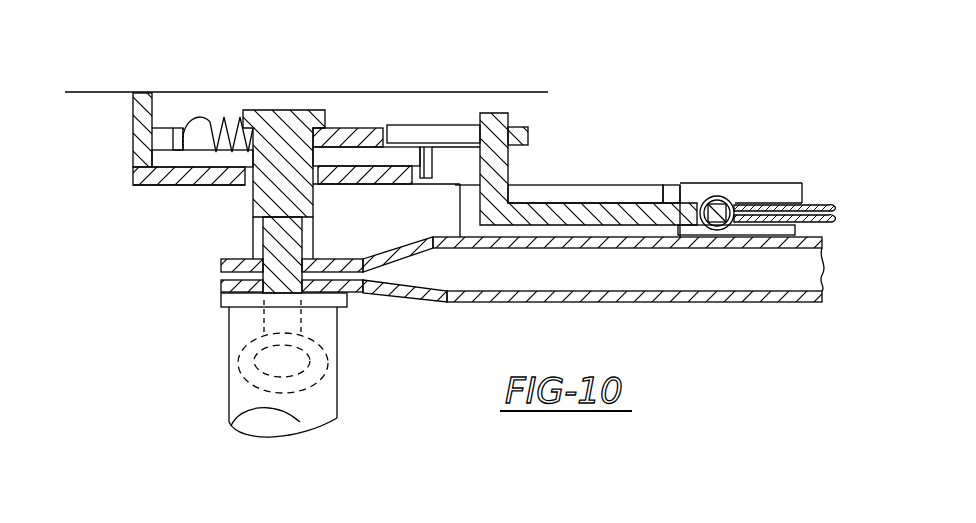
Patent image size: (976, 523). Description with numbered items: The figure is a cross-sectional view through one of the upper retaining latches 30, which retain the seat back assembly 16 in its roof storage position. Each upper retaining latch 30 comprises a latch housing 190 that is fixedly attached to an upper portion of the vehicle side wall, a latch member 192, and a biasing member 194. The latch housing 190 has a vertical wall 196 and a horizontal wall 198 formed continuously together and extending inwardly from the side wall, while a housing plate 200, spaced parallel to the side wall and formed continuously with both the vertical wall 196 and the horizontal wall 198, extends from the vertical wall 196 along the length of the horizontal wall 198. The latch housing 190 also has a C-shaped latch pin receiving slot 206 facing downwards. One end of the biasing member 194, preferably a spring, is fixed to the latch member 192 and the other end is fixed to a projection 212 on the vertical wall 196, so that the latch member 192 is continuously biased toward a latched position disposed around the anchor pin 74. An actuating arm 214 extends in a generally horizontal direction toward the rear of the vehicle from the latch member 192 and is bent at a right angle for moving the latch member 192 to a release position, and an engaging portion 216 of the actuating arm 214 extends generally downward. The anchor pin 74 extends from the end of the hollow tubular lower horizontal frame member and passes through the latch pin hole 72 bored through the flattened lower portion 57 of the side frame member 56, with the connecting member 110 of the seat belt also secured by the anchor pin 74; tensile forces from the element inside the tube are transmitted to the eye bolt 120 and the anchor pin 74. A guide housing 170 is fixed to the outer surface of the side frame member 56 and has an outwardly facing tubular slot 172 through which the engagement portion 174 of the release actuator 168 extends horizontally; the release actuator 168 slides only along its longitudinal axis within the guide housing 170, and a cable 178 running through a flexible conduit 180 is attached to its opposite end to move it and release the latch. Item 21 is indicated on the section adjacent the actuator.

The seat back assembly 16 is at (745, 181).
The pin end 21 is at (435, 174).
The upper retaining latch 30 is at (125, 171).
The side frame member 56 is at (732, 303).
The lower portion 57 is at (366, 283).
The latch pin hole 72 is at (305, 227).
The anchor pin 74 is at (315, 92).
The connecting member 110 is at (350, 294).
The eye bolt 120 is at (320, 384).
The release actuator 168 is at (640, 203).
The guide housing 170 is at (688, 185).
The slot 172 is at (585, 197).
The engagement portion 174 is at (504, 113).
The cable 178 is at (756, 202).
The flexible conduit 180 is at (818, 203).
The latch housing 190 is at (137, 186).
The latch member 192 is at (390, 125).
The biasing member 194 is at (215, 122).
The vertical wall 196 is at (133, 157).
The horizontal wall 198 is at (265, 92).
The housing plate 200 is at (186, 186).
The latch pin receiving slot 206 is at (253, 228).
The projection 212 is at (172, 132).
The actuating arm 214 is at (452, 125).
The engaging portion 216 is at (530, 137).